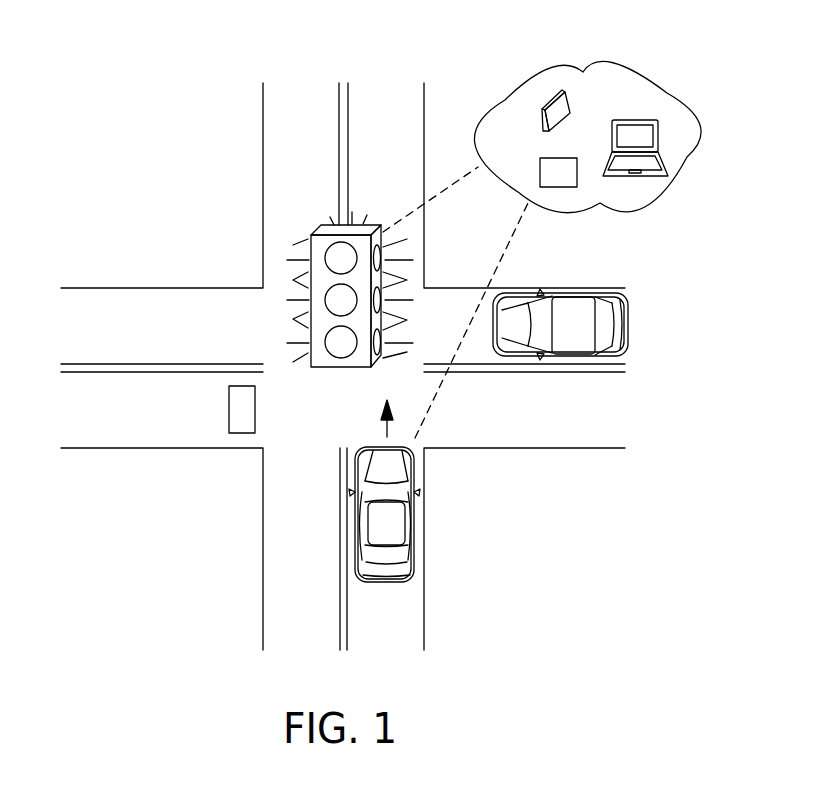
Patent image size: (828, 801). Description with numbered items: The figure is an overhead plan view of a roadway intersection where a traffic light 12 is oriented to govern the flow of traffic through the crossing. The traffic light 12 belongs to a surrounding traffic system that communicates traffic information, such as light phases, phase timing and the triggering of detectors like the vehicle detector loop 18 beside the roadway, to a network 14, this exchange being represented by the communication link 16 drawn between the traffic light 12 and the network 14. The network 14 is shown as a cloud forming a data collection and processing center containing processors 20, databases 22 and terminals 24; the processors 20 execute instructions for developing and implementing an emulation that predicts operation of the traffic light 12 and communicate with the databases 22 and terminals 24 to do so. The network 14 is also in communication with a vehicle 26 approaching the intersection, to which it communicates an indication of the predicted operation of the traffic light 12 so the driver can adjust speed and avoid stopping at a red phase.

The traffic light 12 is at (317, 230).
The network 14 is at (634, 70).
The communication link 16 is at (454, 183).
The vehicle detector loop 18 is at (243, 433).
The processor 20 is at (551, 97).
The database 22 is at (562, 187).
The terminal 24 is at (658, 132).
The vehicle 26 is at (413, 530).